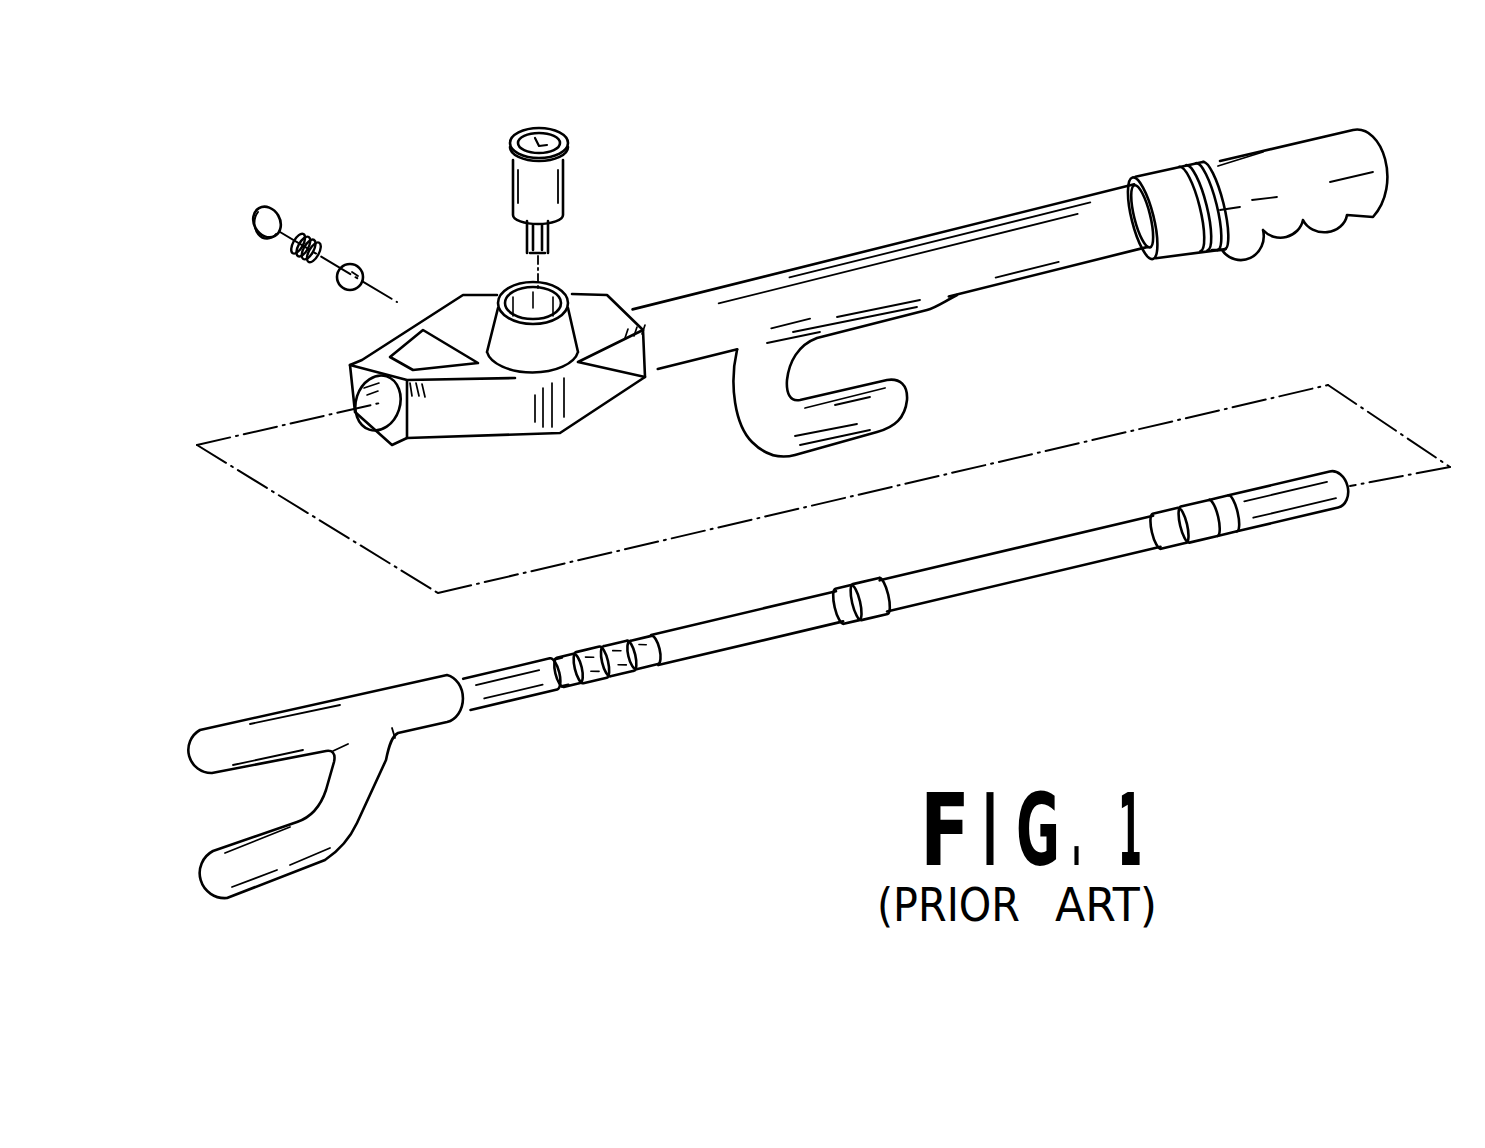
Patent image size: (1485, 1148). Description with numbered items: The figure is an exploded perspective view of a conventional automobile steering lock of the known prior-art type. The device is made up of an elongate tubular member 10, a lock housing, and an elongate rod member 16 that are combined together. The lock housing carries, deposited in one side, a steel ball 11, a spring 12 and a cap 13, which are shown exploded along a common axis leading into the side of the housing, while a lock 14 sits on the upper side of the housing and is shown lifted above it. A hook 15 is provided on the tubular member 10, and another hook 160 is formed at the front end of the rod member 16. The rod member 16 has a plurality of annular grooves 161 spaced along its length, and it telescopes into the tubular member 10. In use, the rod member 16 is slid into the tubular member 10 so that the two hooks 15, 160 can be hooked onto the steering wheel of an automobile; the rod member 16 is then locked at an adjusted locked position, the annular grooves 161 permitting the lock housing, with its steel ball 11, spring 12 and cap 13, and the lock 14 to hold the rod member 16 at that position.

The elongate tubular member 10 is at (951, 228).
The steel ball 11 is at (362, 264).
The spring 12 is at (321, 234).
The cap 13 is at (274, 206).
The lock 14 is at (573, 197).
The hook 15 is at (910, 405).
The elongate rod member 16 is at (807, 655).
The hook 160 is at (372, 790).
The annular grooves 161 is at (617, 675).